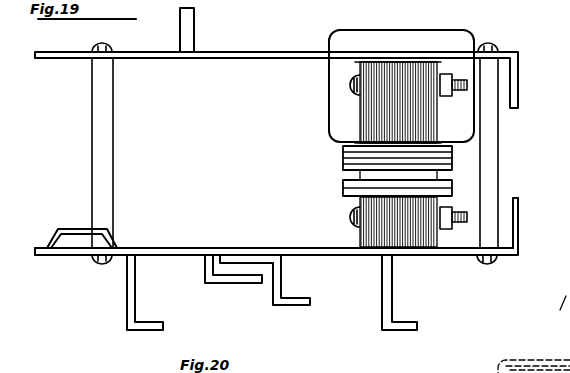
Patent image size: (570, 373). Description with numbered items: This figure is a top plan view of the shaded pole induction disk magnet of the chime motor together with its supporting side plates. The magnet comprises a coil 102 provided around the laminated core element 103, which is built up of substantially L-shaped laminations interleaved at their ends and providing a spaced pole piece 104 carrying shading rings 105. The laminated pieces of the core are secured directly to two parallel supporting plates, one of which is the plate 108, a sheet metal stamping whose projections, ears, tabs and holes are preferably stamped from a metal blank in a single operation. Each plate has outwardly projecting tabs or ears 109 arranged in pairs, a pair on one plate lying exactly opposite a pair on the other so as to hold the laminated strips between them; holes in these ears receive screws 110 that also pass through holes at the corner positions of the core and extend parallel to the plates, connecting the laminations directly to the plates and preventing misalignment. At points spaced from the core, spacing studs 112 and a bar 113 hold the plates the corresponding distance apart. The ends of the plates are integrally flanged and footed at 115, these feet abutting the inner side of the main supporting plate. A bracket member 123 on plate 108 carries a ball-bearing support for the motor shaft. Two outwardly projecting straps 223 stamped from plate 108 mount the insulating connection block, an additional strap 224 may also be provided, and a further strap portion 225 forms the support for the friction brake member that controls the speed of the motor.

The coil 102 is at (446, 42).
The laminated core element 103 is at (372, 114).
The pole piece 104 is at (250, 58).
The shading rings 105 is at (343, 186).
The supporting plate 108 is at (160, 247).
The tabs or ears 109 is at (357, 66).
The screws 110 is at (350, 92).
The spacing studs 112 is at (108, 163).
The bar 113 is at (490, 151).
The feet 115 is at (518, 86).
The bracket member 123 is at (281, 303).
The straps 223 is at (133, 295).
The additional strap 224 is at (69, 229).
The strap portion 225 is at (212, 285).